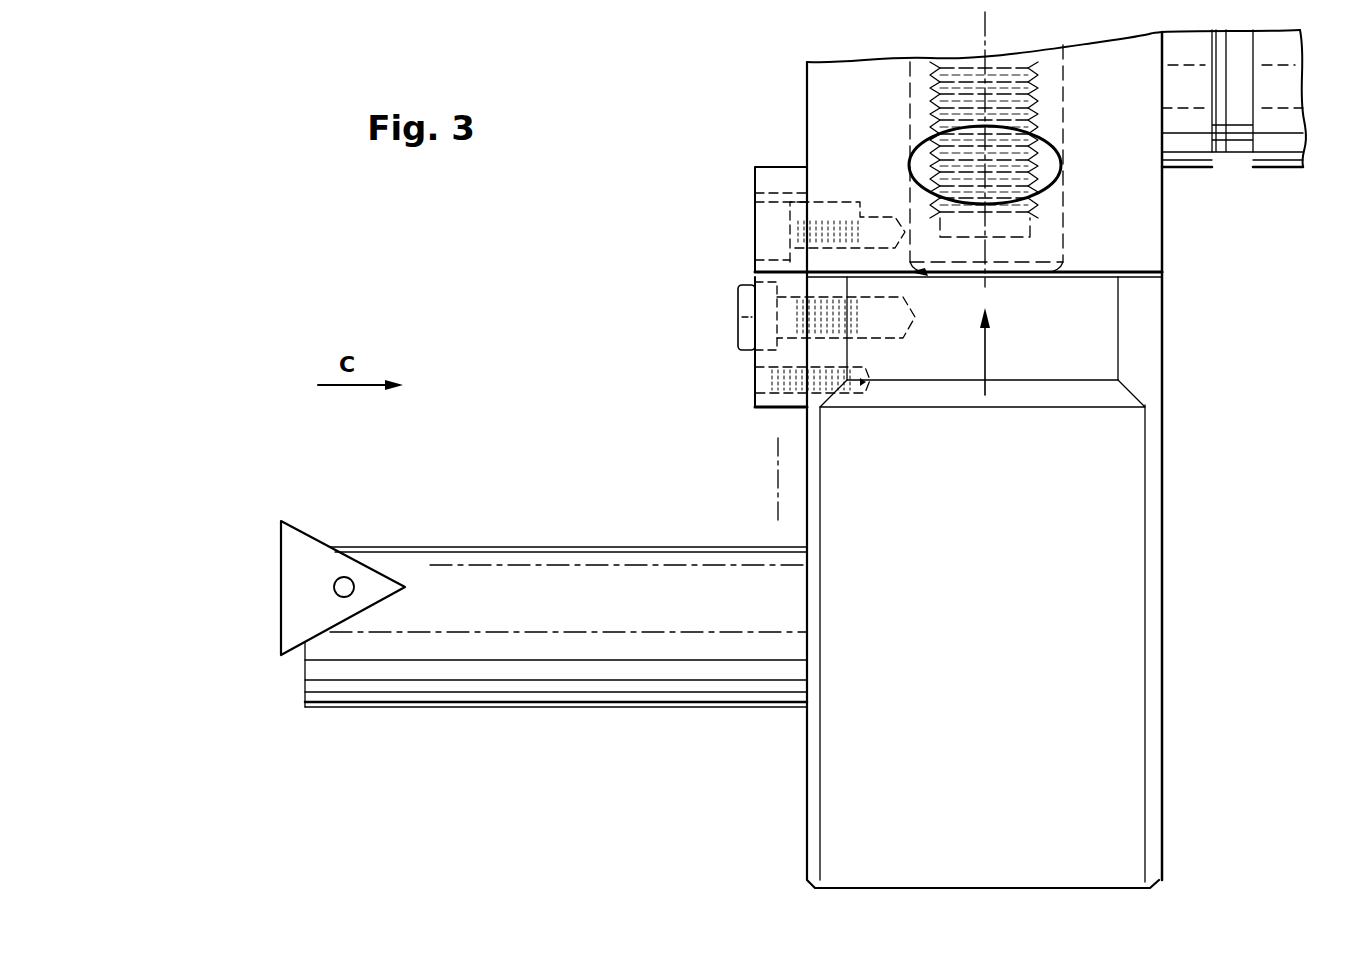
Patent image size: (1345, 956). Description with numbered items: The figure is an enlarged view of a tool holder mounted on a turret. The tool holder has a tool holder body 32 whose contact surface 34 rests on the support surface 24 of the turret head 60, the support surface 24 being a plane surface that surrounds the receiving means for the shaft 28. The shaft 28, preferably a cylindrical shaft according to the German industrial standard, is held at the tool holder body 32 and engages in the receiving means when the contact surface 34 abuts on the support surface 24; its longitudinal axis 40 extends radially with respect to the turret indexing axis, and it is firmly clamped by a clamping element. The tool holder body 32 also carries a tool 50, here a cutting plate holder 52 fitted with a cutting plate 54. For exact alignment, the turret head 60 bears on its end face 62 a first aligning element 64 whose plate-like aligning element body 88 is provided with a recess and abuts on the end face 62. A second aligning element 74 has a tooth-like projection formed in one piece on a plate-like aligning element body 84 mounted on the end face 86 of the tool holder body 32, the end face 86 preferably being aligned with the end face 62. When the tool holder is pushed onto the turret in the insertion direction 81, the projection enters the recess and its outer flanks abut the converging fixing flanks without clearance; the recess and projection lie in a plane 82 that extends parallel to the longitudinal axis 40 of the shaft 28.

The support surface 24 is at (1140, 278).
The shaft 28 is at (1055, 88).
The tool holder body 32 is at (1150, 376).
The contact surface 34 is at (1110, 270).
The longitudinal axis 40 is at (985, 28).
The tool 50 is at (572, 718).
The cutting plate holder 52 is at (490, 668).
The cutting plate 54 is at (293, 590).
The turret head 60 is at (818, 162).
The end face 62 is at (805, 105).
The first aligning element 64 is at (745, 237).
The second aligning element 74 is at (740, 394).
The insertion direction 81 is at (988, 357).
The plane 82 is at (778, 502).
The aligning element body 84 is at (788, 355).
The end face 86 is at (805, 445).
The aligning element body 88 is at (768, 180).